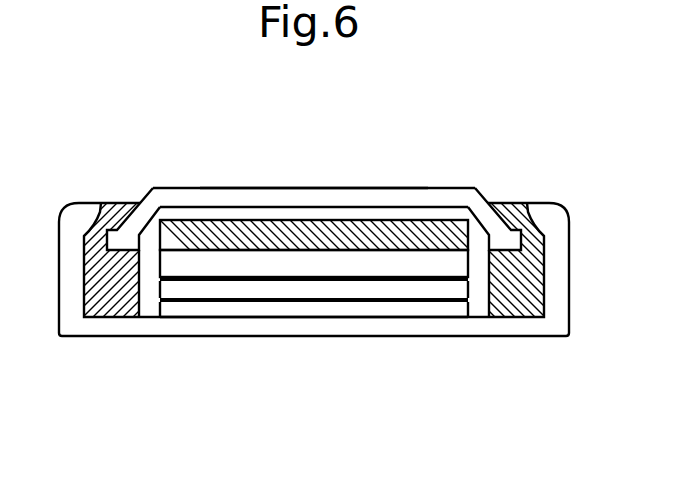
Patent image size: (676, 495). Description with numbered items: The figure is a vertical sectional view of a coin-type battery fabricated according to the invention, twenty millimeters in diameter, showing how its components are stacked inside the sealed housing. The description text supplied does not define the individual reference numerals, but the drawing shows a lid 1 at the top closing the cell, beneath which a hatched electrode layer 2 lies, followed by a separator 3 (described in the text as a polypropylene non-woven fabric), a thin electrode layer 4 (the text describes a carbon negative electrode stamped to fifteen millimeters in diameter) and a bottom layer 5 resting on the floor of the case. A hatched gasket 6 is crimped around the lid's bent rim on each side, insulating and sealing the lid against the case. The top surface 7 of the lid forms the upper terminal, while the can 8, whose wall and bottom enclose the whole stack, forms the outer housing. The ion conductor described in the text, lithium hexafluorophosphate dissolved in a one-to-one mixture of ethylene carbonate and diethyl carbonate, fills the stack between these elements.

The sealing plate 1 is at (456, 210).
The positive electrode 2 is at (462, 226).
The separator 3 is at (453, 263).
The negative electrode 4 is at (470, 288).
The current collector 5 is at (429, 312).
The gasket 6 is at (118, 203).
The positive terminal surface 7 is at (304, 193).
The battery case 8 is at (318, 330).